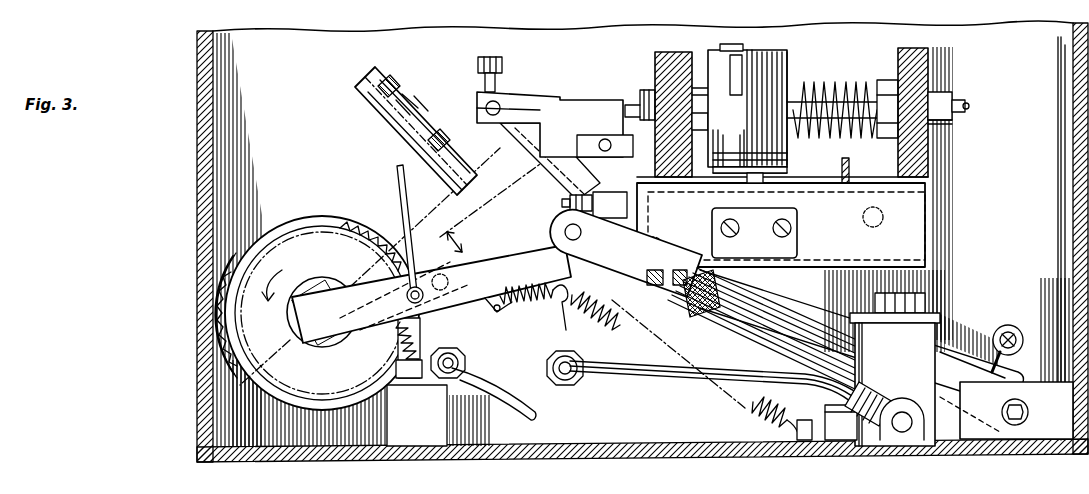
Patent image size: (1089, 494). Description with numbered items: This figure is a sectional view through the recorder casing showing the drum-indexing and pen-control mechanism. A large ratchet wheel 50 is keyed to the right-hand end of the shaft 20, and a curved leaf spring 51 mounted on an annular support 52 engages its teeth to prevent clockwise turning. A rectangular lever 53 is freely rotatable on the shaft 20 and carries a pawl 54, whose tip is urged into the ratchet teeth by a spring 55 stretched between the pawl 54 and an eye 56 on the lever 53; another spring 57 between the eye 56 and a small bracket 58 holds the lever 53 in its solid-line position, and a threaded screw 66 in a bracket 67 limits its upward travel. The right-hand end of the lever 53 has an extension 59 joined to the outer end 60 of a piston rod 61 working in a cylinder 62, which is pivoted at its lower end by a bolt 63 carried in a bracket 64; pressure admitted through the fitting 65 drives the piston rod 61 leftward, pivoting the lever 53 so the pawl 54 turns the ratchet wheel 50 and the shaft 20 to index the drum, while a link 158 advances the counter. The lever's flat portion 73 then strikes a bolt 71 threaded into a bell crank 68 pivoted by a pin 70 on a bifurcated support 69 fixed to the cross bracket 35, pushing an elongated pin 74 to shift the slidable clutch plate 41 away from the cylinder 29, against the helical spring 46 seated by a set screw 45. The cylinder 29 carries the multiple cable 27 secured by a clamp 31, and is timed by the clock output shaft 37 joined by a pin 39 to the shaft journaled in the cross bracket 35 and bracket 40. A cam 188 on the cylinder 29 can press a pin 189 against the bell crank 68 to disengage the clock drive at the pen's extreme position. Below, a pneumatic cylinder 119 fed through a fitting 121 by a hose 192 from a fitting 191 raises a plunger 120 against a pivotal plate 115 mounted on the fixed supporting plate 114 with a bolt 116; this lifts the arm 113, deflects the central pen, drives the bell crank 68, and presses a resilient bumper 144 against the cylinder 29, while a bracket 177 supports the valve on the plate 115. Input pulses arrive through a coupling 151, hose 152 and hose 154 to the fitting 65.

The shaft 20 is at (322, 330).
The multiple cable 27 is at (747, 108).
The cylinder 29 is at (733, 102).
The clamp 31 is at (745, 52).
The cross bracket 35 is at (660, 68).
The output shaft 37 is at (968, 106).
The pin 39 is at (945, 127).
The bracket 40 is at (925, 65).
The slidable clutch plate 41 is at (790, 62).
The set screw 45 is at (880, 80).
The helical spring 46 is at (816, 88).
The ratchet wheel 50 is at (292, 238).
The curved leaf spring 51 is at (222, 333).
The annular support 52 is at (332, 217).
The rectangular lever 53 is at (433, 308).
The pawl 54 is at (497, 313).
The spring 55 is at (528, 298).
The eye 56 is at (562, 305).
The spring 57 is at (606, 328).
The small bracket 58 is at (800, 440).
The extension 59 is at (562, 225).
The outer end of piston rod 60 is at (606, 262).
The piston rod 61 is at (665, 289).
The cylinder 62 is at (722, 320).
The bolt 63 is at (1010, 426).
The bracket 64 is at (1050, 440).
The fitting 65 is at (1005, 326).
The threaded screw 66 is at (384, 104).
The bracket 67 is at (368, 82).
The bell crank 68 is at (543, 98).
The bifurcated support 69 is at (586, 135).
The pin 70 is at (605, 138).
The bolt 71 is at (478, 64).
The flat portion 73 is at (533, 250).
The elongated pin 74 is at (645, 105).
The arm 113 is at (849, 178).
The fixed supporting plate 114 is at (918, 208).
The pivotal plate 115 is at (930, 270).
The bolt 116 is at (866, 224).
The pneumatic cylinder 119 is at (925, 375).
The plunger 120 is at (908, 300).
The fitting 121 is at (888, 440).
The resilient bumper 144 is at (765, 178).
The coupling 151 is at (470, 360).
The hose 152 is at (514, 430).
The hose 154 is at (1016, 332).
The link 158 is at (399, 192).
The bracket 177 is at (797, 222).
The cam 188 is at (700, 70).
The pin 189 is at (781, 225).
The fitting 191 is at (572, 386).
The hose 192 is at (650, 380).